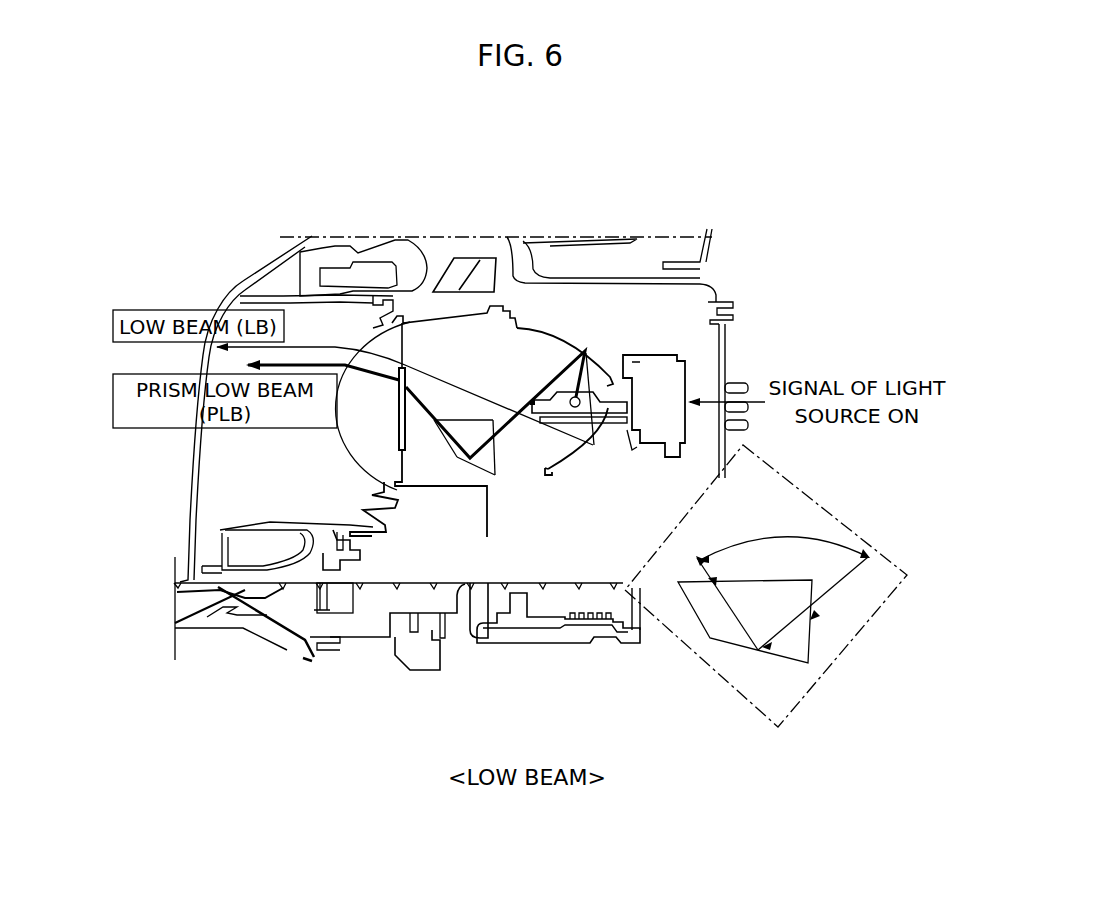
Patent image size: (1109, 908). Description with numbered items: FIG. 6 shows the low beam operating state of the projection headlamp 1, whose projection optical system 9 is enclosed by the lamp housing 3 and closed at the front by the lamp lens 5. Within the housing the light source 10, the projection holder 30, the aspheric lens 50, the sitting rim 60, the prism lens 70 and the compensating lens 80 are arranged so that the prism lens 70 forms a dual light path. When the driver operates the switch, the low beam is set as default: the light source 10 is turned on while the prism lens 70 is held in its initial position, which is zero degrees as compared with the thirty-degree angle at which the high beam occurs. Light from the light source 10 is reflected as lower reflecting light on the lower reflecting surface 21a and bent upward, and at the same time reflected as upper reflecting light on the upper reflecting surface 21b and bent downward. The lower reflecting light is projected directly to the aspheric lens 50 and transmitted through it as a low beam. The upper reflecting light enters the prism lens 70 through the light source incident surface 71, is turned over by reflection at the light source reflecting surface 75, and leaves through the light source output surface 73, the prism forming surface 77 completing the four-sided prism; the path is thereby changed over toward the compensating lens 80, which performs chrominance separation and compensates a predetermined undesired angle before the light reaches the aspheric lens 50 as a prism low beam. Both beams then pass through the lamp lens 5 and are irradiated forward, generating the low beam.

The projection headlamp 1 is at (551, 200).
The lamp housing 3 is at (392, 291).
The lamp lens 5 is at (188, 462).
The projection optical system 9 is at (537, 511).
The light source 10 is at (597, 405).
The lower reflecting surface 21a is at (563, 465).
The upper reflecting surface 21b is at (572, 340).
The projection holder 30 is at (470, 307).
The aspheric lens 50 is at (330, 437).
The sitting rim 60 is at (403, 321).
The prism lens 70 is at (760, 668).
The light source incident surface 71 is at (497, 450).
The light source output surface 73 is at (457, 420).
The light source reflecting surface 75 is at (465, 478).
The prism forming surface 77 is at (452, 436).
The compensating lens 80 is at (397, 423).